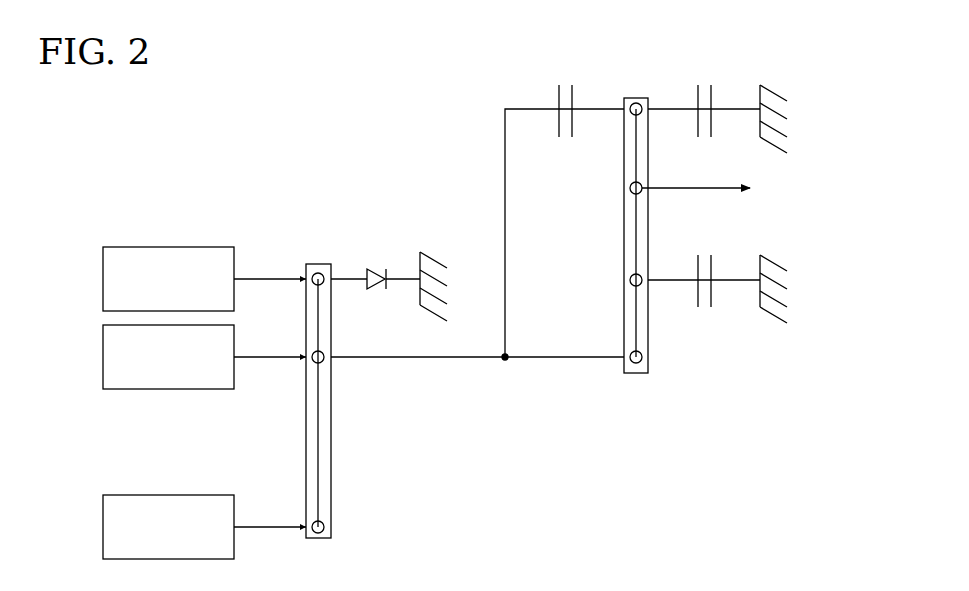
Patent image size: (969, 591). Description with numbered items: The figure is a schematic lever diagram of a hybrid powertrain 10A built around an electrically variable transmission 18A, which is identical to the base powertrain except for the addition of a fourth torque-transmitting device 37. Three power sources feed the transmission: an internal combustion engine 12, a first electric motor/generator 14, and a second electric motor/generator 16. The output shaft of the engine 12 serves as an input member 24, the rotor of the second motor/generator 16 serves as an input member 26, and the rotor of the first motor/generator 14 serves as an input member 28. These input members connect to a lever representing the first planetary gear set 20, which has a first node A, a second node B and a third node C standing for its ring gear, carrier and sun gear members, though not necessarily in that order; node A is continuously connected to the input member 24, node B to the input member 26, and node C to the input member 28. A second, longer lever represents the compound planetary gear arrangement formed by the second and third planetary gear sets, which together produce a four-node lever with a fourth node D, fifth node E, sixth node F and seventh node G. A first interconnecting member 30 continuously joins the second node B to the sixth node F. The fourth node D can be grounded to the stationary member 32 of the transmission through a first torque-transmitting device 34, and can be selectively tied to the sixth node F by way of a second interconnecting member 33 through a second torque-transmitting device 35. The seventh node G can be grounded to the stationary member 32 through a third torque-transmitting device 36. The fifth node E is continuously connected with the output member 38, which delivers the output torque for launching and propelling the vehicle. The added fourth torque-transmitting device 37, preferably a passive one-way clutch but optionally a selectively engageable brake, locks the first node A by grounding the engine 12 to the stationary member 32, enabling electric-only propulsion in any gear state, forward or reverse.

The powertrain 10A is at (196, 188).
The electrically variable transmission 18A is at (379, 108).
The internal combustion engine 12 is at (103, 282).
The first electric motor/generator 14 is at (103, 520).
The second electric motor/generator 16 is at (103, 364).
The first planetary gear set 20 is at (342, 388).
The input member 24 is at (285, 283).
The input member 26 is at (268, 362).
The input member 28 is at (268, 532).
The first interconnecting member 30 is at (570, 360).
The stationary member 32 is at (420, 252).
The second interconnecting member 33 is at (505, 190).
The first torque-transmitting device 34 is at (713, 93).
The second torque-transmitting device 35 is at (574, 93).
The third torque-transmitting device 36 is at (716, 296).
The fourth torque-transmitting device 37 is at (376, 266).
The output member 38 is at (750, 193).
The first node A is at (318, 273).
The second node B is at (324, 354).
The third node C is at (324, 530).
The fourth node D is at (636, 103).
The fifth node E is at (642, 188).
The sixth node F is at (642, 360).
The seventh node G is at (630, 280).